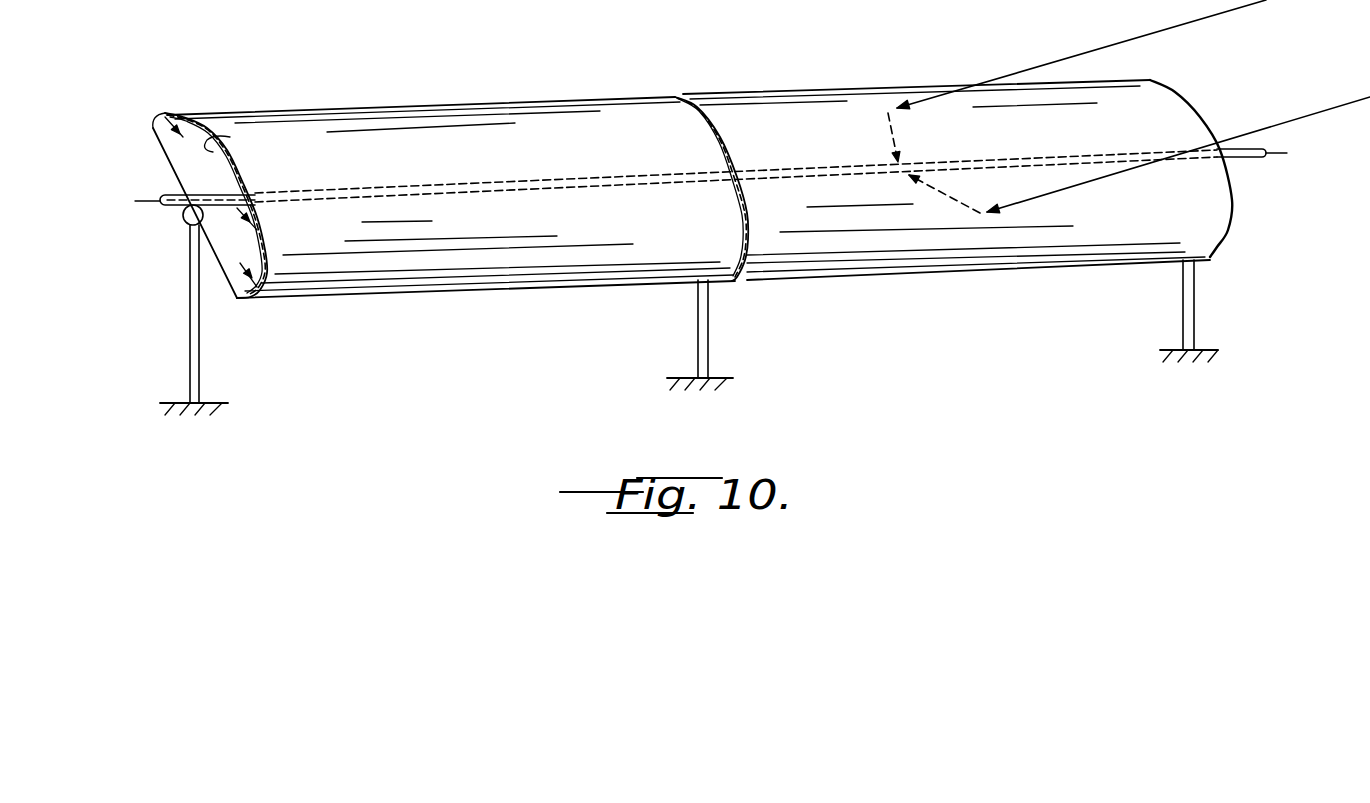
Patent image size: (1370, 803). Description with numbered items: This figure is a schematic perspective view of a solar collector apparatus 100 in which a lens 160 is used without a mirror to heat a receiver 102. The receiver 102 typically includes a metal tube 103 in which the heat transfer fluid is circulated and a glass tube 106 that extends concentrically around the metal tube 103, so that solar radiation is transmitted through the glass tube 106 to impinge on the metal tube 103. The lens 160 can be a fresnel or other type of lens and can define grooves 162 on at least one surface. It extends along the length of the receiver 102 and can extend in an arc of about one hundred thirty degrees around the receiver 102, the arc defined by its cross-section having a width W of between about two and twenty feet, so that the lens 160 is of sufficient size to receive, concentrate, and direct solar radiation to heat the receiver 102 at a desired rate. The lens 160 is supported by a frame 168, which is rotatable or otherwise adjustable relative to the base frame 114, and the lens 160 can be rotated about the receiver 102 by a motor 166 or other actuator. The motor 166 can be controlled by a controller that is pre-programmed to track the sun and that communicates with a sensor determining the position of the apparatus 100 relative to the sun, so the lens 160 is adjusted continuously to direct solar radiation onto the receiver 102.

The apparatus 100 is at (715, 163).
The lens 160 is at (447, 132).
The grooves 162 is at (230, 137).
The receiver 102 is at (208, 183).
The metal tube 103 is at (150, 197).
The glass tube 106 is at (260, 224).
The motor 166 is at (184, 218).
The width W is at (230, 237).
The frame 168 is at (223, 282).
The base frame 114 is at (187, 353).